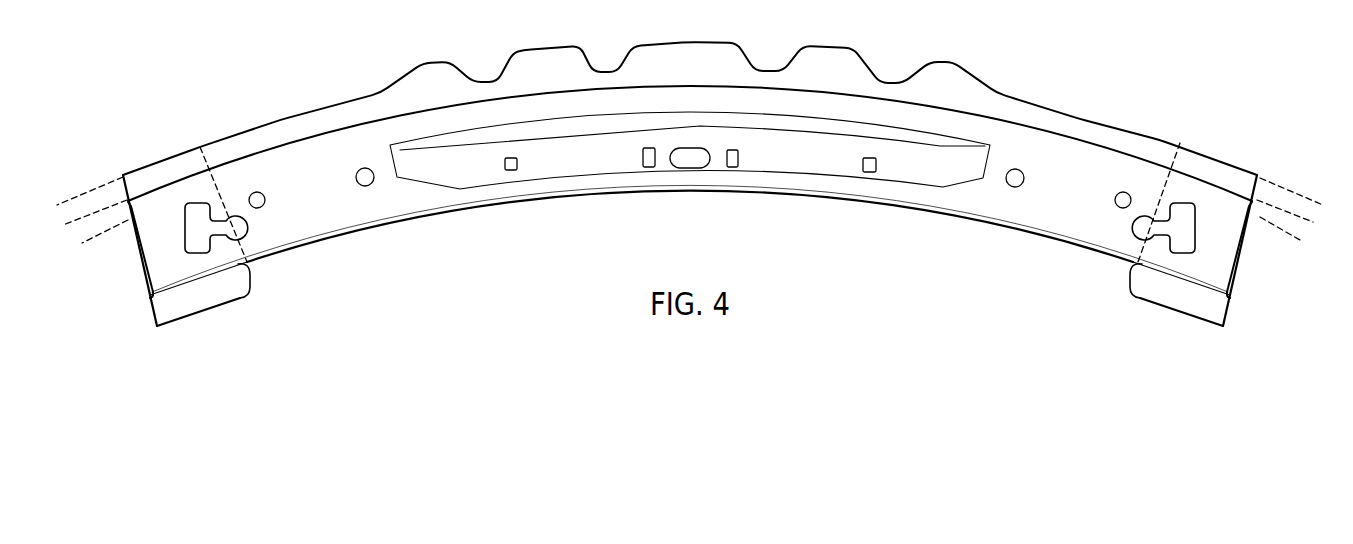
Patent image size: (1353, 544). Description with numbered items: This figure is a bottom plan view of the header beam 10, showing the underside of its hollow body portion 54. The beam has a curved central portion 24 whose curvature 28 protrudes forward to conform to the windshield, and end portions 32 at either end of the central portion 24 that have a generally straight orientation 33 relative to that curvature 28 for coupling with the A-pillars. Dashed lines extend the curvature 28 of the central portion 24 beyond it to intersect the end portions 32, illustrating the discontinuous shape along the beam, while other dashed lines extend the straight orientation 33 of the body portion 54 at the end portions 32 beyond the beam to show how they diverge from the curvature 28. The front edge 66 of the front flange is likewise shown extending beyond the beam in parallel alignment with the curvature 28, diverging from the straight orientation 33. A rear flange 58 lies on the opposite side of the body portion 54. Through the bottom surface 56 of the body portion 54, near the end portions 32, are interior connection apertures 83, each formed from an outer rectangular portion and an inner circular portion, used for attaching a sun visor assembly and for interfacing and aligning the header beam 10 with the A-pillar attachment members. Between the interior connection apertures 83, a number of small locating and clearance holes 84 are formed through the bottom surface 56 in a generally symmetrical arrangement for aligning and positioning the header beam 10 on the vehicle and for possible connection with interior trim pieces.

The header beam 10 is at (372, 55).
The central portion 24 is at (973, 62).
The bottom surface 56 is at (1053, 153).
The body portion 54 is at (410, 197).
The locating and clearance holes 84 is at (259, 208).
The end portions 32 is at (178, 267).
The rear flange 58 is at (230, 282).
The interior connection apertures 83 is at (200, 232).
The front edge 66 is at (90, 190).
The straight orientation 33 is at (67, 225).
The curvature 28 is at (100, 228).